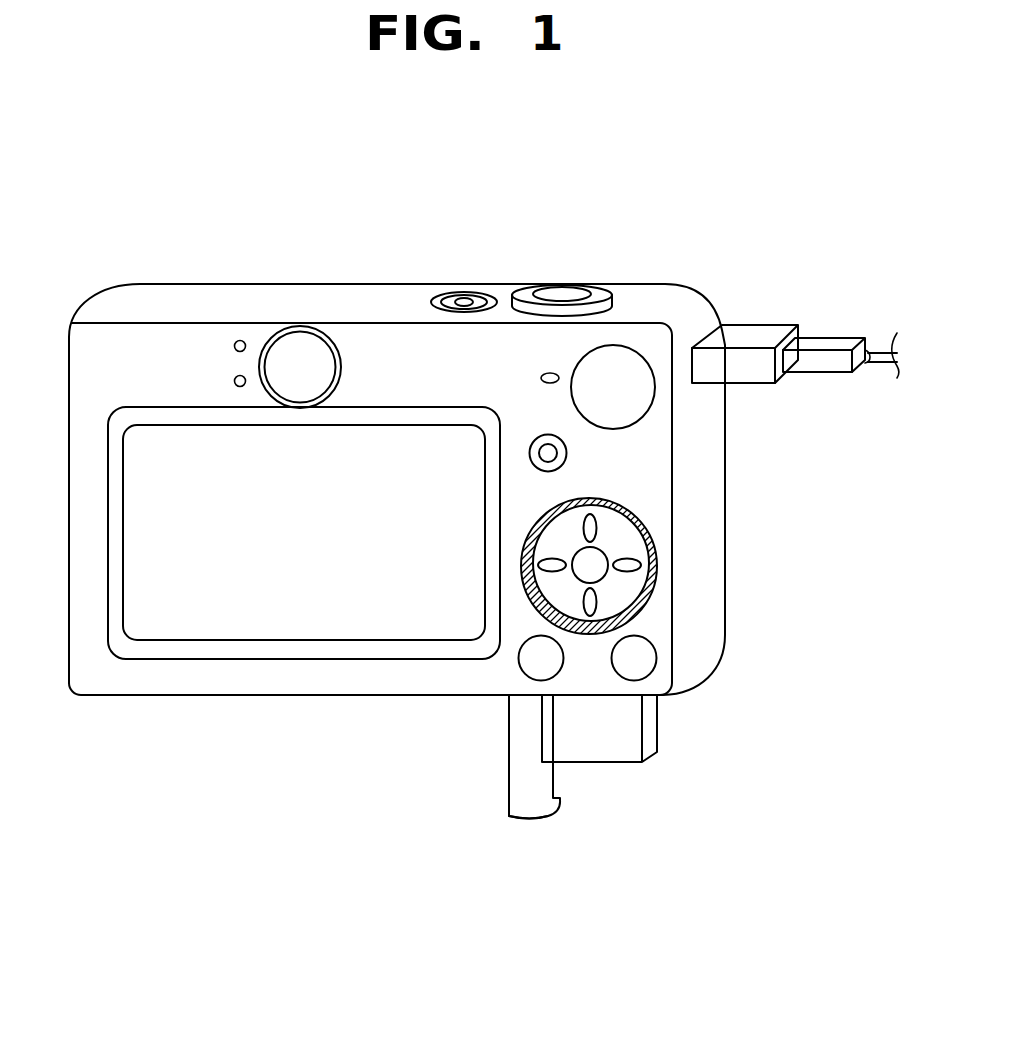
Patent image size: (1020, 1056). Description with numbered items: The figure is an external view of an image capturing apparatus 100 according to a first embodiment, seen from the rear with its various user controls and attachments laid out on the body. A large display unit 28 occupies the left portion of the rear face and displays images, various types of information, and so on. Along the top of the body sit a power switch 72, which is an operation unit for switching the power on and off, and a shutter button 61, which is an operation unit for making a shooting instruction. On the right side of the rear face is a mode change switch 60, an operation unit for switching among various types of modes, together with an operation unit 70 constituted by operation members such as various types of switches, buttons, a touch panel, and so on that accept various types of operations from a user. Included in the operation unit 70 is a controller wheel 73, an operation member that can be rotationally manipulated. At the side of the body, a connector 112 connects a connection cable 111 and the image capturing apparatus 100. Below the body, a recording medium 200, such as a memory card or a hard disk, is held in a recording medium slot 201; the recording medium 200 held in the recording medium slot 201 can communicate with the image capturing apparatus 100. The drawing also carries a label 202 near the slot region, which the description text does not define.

The image capturing apparatus 100 is at (157, 746).
The display unit 28 is at (190, 440).
The power switch 72 is at (462, 298).
The shutter button 61 is at (562, 295).
The operation unit 70 is at (612, 302).
The controller wheel 73 is at (556, 504).
The mode change switch 60 is at (640, 402).
The connector 112 is at (748, 335).
The connection cable 111 is at (828, 346).
The recording medium 200 is at (615, 753).
The recording medium slot 201 is at (562, 697).
The lid 202 is at (537, 820).